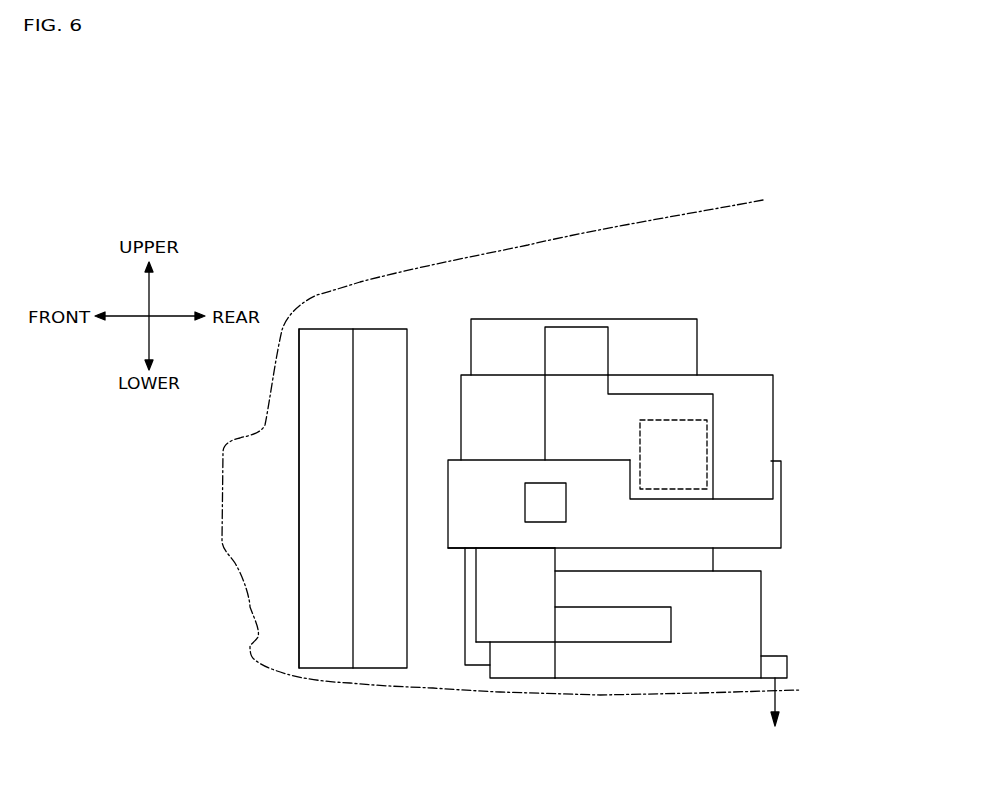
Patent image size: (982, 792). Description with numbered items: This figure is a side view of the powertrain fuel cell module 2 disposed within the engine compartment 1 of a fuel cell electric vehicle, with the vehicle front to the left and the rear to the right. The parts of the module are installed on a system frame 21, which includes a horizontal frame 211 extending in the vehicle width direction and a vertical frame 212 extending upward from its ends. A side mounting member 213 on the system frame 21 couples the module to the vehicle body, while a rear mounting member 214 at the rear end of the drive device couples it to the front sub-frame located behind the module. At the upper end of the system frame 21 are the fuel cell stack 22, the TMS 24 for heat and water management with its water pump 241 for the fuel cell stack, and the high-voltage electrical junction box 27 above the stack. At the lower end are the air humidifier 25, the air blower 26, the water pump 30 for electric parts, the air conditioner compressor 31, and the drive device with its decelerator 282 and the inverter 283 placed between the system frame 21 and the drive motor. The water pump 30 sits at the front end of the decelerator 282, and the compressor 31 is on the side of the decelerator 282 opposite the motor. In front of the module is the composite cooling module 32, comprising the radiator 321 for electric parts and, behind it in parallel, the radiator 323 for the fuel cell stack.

The engine compartment 1 is at (423, 338).
The powertrain fuel cell module 2 is at (669, 301).
The system frame 21 is at (600, 578).
The horizontal frame 211 is at (462, 537).
The vertical frame 212 is at (778, 477).
The side mounting member 213 is at (535, 488).
The rear mounting member 214 is at (785, 667).
The fuel cell stack 22 is at (742, 375).
The TMS 24 is at (574, 327).
The water pump for a fuel cell stack 241 is at (707, 437).
The air humidifier 25 is at (470, 665).
The air blower 26 is at (520, 642).
The electrical junction box 27 is at (503, 320).
The decelerator 282 is at (760, 613).
The inverter 283 is at (710, 562).
The water pump for electric parts 30 is at (542, 678).
The air conditioner compressor 31 is at (653, 642).
The composite cooling module 32 is at (323, 449).
The radiator for electric parts 321 is at (303, 500).
The radiator for a fuel cell stack 323 is at (380, 583).